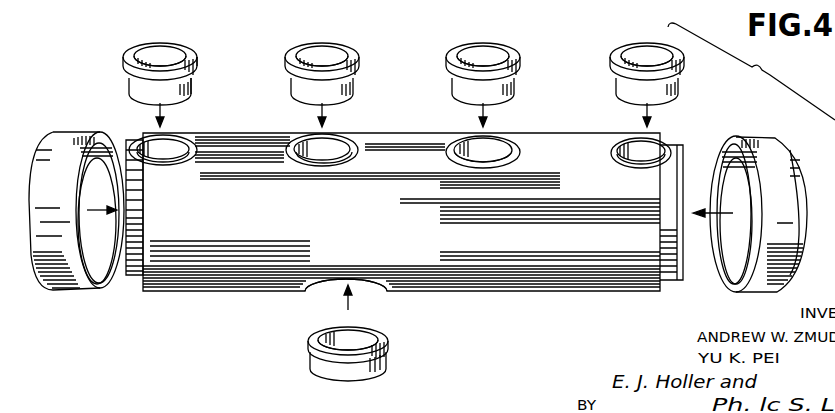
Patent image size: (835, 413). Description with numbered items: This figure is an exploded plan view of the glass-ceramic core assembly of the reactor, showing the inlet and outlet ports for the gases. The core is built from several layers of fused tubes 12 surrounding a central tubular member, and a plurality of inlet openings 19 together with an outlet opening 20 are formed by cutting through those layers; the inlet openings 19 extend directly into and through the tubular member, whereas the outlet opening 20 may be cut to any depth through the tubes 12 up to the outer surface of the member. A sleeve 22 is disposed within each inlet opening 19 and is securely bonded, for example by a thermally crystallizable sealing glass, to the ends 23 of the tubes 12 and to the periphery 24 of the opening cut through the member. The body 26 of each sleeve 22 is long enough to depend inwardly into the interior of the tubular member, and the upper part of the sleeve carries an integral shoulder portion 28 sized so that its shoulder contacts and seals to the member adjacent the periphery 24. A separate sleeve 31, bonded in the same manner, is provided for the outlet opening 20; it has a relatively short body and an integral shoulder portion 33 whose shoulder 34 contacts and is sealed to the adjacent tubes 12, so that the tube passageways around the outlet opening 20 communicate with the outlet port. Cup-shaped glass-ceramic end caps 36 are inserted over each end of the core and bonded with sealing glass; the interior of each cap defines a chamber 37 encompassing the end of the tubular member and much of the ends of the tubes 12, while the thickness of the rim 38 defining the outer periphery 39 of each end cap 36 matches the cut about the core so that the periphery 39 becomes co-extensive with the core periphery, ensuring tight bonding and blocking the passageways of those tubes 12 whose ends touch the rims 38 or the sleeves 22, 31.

The tubes 12 is at (510, 280).
The inlet openings 19 is at (185, 143).
The outlet opening 20 is at (322, 284).
The sleeve 22 is at (190, 50).
The ends of the tubes 23 is at (165, 140).
The periphery of the opening 24 is at (155, 160).
The body of the sleeve 26 is at (192, 86).
The shoulder portion 28 is at (199, 67).
The sleeve 31 is at (386, 356).
The shoulder portion 33 is at (314, 364).
The shoulder 34 is at (310, 346).
The end caps 36 is at (64, 134).
The chamber 37 is at (98, 258).
The rim 38 is at (66, 292).
The outer periphery 39 is at (139, 280).